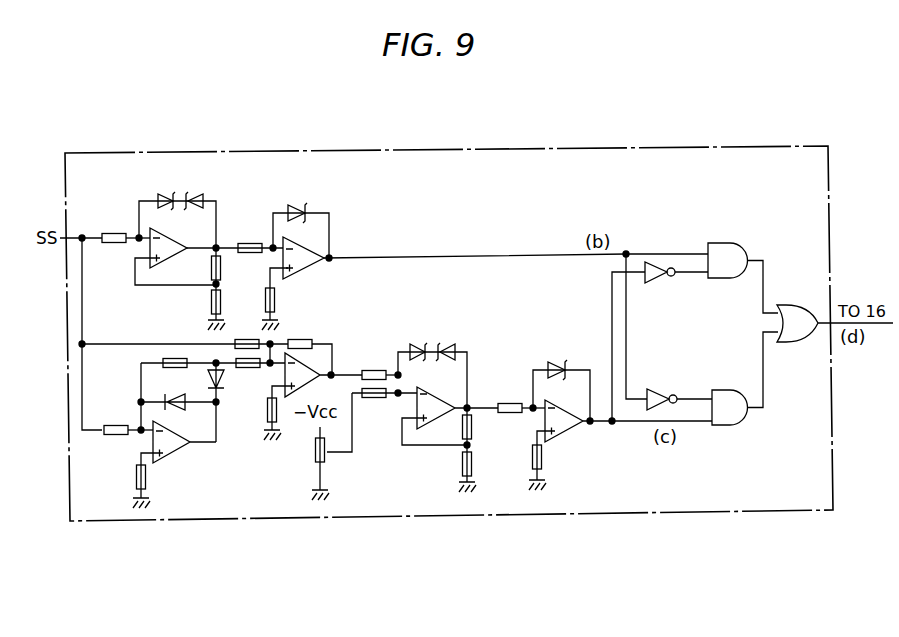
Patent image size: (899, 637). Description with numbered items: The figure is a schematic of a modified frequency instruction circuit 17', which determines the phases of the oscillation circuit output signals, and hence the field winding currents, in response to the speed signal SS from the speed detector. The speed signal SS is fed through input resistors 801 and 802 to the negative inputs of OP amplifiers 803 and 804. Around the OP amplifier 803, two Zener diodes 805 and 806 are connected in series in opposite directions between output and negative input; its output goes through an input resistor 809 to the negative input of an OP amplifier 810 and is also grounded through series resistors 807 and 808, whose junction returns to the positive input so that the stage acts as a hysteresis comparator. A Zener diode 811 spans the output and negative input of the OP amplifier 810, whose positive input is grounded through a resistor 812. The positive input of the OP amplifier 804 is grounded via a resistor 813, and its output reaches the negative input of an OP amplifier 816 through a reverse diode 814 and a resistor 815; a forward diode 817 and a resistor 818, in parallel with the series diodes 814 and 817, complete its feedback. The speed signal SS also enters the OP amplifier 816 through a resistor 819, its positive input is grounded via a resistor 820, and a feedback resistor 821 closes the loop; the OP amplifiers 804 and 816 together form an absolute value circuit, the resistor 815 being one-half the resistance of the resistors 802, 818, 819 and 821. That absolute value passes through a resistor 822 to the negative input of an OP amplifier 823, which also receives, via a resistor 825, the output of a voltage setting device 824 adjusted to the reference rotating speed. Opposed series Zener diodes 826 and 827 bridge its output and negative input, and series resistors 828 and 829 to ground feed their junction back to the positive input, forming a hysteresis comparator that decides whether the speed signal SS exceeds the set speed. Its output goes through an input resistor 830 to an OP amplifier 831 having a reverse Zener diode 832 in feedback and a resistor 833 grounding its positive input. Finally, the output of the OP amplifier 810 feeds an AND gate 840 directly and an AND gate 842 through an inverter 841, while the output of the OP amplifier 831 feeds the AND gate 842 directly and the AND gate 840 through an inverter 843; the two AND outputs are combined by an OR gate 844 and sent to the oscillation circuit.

The frequency instruction circuit 17' is at (449, 313).
The input resistor 801 is at (112, 233).
The input resistor 802 is at (118, 426).
The OP amplifier 803 is at (160, 265).
The OP amplifier 804 is at (172, 456).
The Zener diode 805 is at (162, 192).
The Zener diode 806 is at (201, 192).
The resistor 807 is at (222, 268).
The resistor 808 is at (211, 303).
The input resistor 809 is at (248, 243).
The OP amplifier 810 is at (318, 265).
The Zener diode 811 is at (294, 204).
The resistor 812 is at (276, 301).
The resistor 813 is at (136, 477).
The reverse diode 814 is at (210, 366).
The resistor 815 is at (250, 368).
The OP amplifier 816 is at (308, 368).
The forward diode 817 is at (173, 412).
The resistor 818 is at (141, 366).
The resistor 819 is at (246, 338).
The resistor 820 is at (268, 402).
The feedback resistor 821 is at (296, 341).
The resistor 822 is at (375, 370).
The OP amplifier 823 is at (448, 387).
The voltage setting device 824 is at (329, 462).
The resistor 825 is at (375, 399).
The Zener diode 826 is at (416, 343).
The Zener diode 827 is at (452, 344).
The resistor 828 is at (475, 428).
The resistor 829 is at (462, 466).
The input resistor 830 is at (510, 403).
The OP amplifier 831 is at (576, 434).
The reverse Zener diode 832 is at (557, 361).
The resistor 833 is at (542, 455).
The AND gate 840 is at (727, 243).
The inverter 841 is at (654, 389).
The AND gate 842 is at (720, 390).
The inverter 843 is at (652, 284).
The OR gate 844 is at (795, 342).